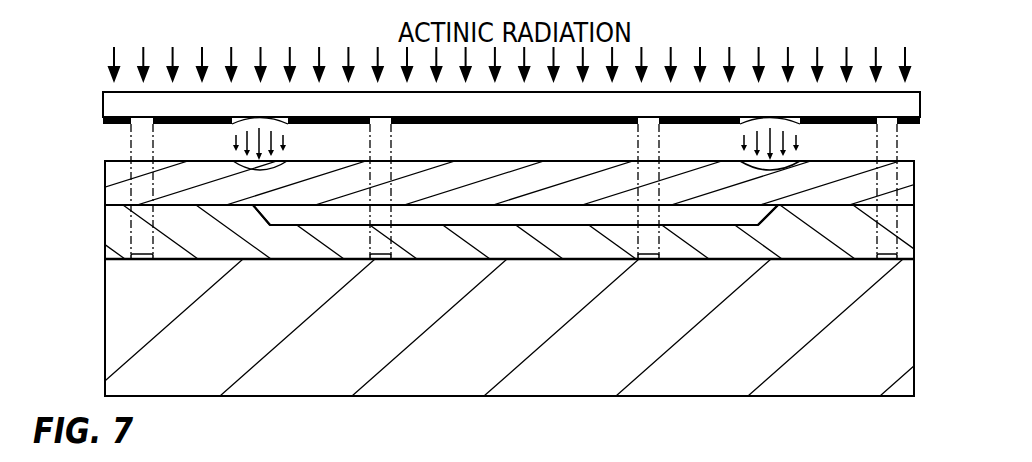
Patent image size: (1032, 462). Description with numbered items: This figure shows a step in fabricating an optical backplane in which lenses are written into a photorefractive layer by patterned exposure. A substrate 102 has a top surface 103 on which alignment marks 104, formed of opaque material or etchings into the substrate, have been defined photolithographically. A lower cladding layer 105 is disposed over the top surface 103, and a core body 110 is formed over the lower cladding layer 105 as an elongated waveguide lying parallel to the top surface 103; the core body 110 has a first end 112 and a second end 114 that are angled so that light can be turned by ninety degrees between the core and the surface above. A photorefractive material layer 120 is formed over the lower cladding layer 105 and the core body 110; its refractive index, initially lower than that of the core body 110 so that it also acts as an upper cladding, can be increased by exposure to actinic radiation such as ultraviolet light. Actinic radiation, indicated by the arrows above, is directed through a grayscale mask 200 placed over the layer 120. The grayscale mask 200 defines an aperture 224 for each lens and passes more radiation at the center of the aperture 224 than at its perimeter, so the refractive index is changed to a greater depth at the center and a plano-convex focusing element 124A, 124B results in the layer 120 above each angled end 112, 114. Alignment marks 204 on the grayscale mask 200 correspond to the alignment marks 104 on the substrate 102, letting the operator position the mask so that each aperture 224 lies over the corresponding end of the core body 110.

The grayscale mask 200 is at (103, 107).
The alignment marks 204 is at (382, 120).
The aperture 224 is at (270, 121).
The substrate 102 is at (105, 315).
The top surface 103 is at (118, 258).
The lower cladding layer 105 is at (105, 240).
The core body 110 is at (545, 217).
The first end 112 is at (263, 218).
The second end 114 is at (780, 217).
The photorefractive material layer 120 is at (105, 185).
The focusing element 124A is at (263, 170).
The focusing element 124B is at (762, 168).
The alignment marks 104 is at (137, 262).